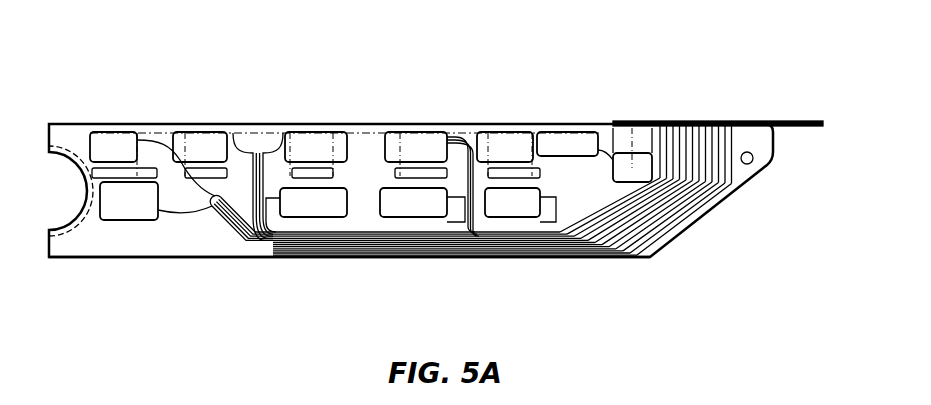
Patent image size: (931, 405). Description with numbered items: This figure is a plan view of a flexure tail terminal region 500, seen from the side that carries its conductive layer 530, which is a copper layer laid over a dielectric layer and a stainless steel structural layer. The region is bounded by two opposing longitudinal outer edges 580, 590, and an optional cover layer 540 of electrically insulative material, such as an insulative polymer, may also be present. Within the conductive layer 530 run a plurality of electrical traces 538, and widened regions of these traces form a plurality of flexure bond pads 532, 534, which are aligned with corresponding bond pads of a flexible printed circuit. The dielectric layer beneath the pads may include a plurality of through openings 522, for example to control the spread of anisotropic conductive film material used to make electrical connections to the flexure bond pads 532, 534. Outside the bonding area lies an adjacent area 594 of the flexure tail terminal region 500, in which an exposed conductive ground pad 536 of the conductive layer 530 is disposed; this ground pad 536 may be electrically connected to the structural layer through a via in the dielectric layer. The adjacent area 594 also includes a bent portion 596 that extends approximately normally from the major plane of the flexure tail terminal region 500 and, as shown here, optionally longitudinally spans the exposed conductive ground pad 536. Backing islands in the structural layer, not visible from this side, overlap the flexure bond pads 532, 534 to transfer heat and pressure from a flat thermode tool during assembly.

The flexure tail terminal region 500 is at (389, 42).
The through openings 522 is at (350, 172).
The conductive layer 530 is at (342, 260).
The flexure bond pads 532 is at (113, 147).
The flexure bond pads 534 is at (130, 196).
The exposed conductive ground pad 536 is at (628, 130).
The electrical traces 538 is at (660, 112).
The cover layer 540 is at (567, 138).
The longitudinal outer edge 580 is at (215, 258).
The longitudinal outer edge 590 is at (265, 128).
The adjacent area 594 is at (703, 212).
The bent portion 596 is at (777, 122).